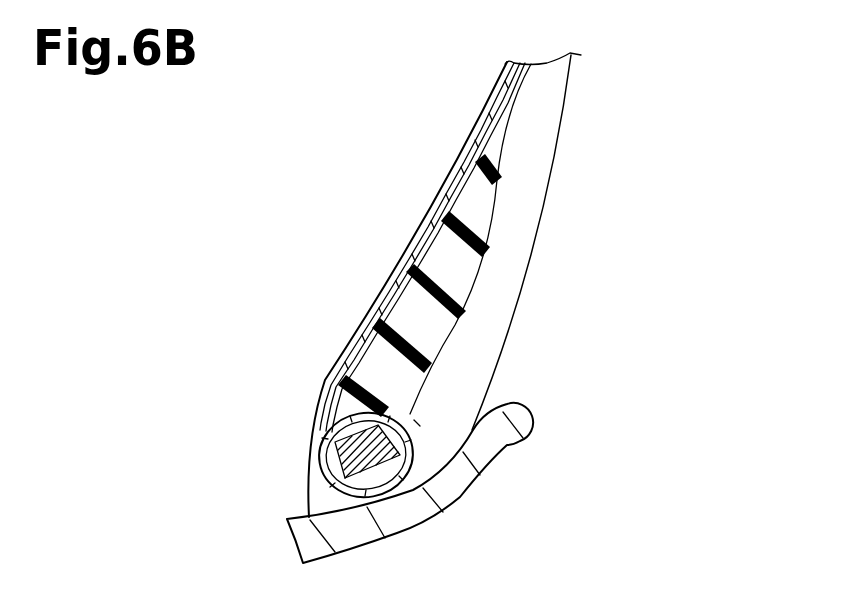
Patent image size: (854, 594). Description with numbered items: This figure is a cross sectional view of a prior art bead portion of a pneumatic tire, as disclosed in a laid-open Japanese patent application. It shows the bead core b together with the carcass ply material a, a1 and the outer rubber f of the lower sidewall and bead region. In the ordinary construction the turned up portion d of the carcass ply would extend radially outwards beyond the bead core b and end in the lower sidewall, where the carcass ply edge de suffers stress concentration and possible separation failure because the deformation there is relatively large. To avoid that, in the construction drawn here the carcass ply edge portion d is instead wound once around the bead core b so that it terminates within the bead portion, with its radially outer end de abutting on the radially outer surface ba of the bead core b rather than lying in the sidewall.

The sheet layer a is at (493, 118).
The sheet layer portion a1 is at (403, 247).
The outer skin f is at (413, 233).
The radially outer surface ba is at (333, 378).
The bead core b is at (328, 410).
The radially outer end de is at (337, 430).
The turned up portion d is at (420, 423).